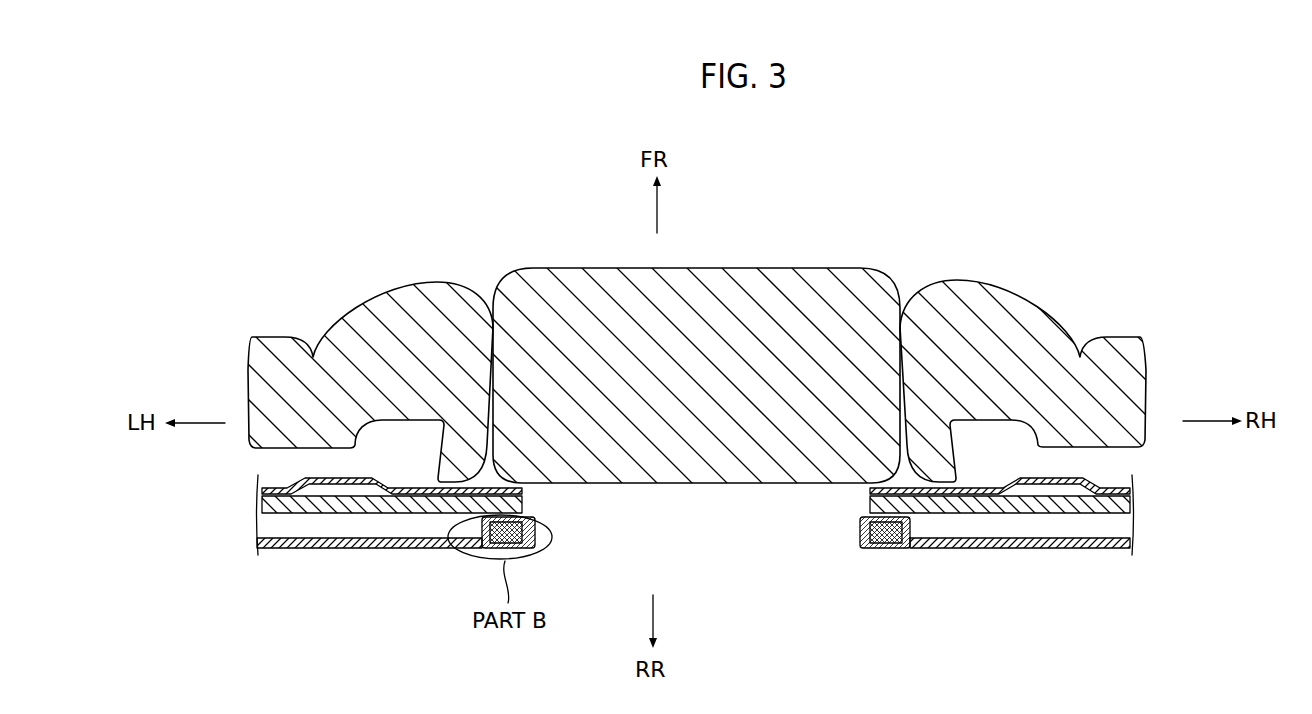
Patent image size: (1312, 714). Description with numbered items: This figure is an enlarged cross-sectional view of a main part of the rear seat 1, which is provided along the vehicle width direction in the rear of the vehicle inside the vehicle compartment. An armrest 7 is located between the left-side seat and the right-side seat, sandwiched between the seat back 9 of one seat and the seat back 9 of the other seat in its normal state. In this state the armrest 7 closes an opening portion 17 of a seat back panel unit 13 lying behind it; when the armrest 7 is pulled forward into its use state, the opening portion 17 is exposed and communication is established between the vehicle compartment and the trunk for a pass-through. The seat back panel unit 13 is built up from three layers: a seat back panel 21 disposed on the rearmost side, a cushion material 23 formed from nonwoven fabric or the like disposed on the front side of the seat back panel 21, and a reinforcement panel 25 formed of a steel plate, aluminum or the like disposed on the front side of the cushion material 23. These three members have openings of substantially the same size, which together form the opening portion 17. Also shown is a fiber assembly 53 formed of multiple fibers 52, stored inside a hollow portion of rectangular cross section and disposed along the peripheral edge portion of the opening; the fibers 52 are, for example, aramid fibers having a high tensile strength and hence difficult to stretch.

The rear seat 1 is at (742, 260).
The armrest 7 is at (578, 290).
The seat back 9 is at (443, 290).
The reinforcement panel 25 is at (870, 487).
The cushion material 23 is at (986, 498).
The seat back panel 21 is at (1052, 550).
The seat back panel unit 13 is at (1113, 556).
The opening portion 17 is at (811, 540).
The fibers 52 is at (885, 550).
The fiber assembly 53 is at (886, 532).